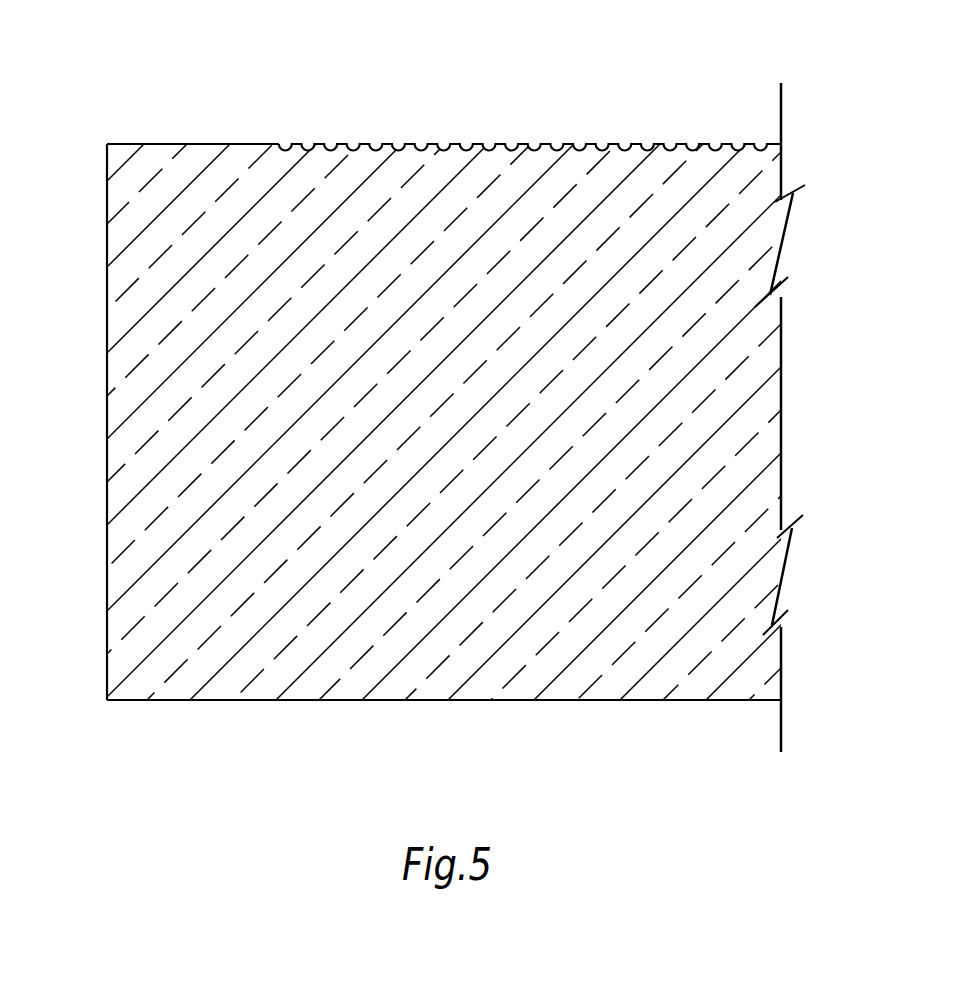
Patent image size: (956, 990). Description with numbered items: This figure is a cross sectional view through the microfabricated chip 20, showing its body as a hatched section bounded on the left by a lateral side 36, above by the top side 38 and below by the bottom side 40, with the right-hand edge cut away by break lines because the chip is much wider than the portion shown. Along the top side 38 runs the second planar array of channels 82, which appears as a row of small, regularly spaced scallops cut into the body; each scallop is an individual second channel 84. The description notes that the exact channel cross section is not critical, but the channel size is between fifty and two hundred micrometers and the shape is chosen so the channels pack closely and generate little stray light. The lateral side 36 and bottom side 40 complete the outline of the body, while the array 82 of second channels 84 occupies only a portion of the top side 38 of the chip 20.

The microfabricated chip 20 is at (141, 43).
The lateral side 36 is at (107, 421).
The top side 38 is at (163, 143).
The bottom side 40 is at (255, 700).
The second planar array of channels 82 is at (328, 97).
The second channel 84 is at (502, 146).